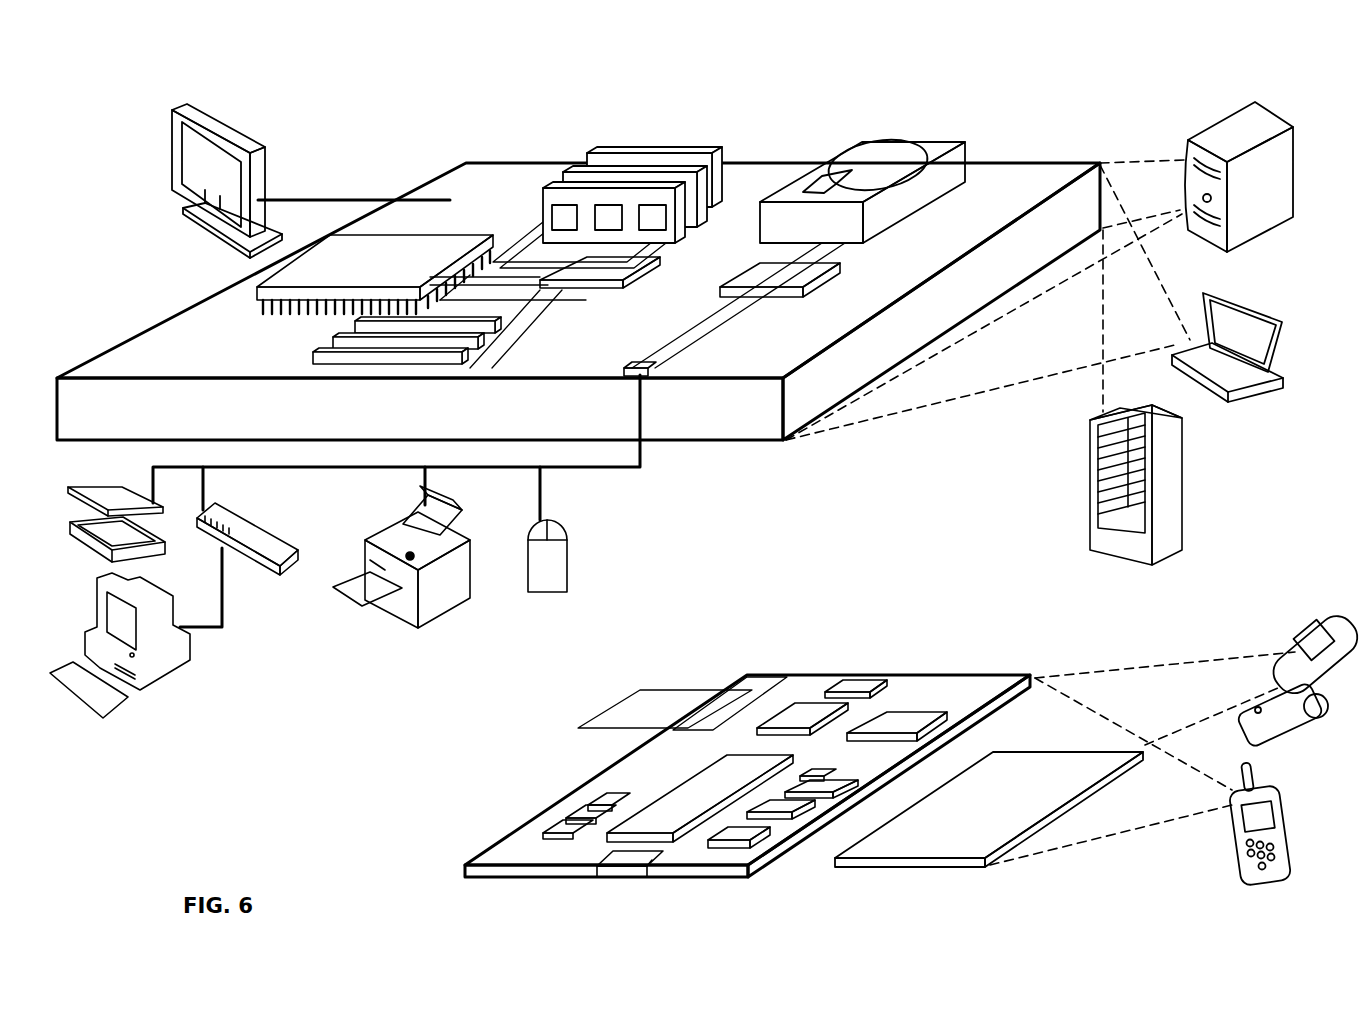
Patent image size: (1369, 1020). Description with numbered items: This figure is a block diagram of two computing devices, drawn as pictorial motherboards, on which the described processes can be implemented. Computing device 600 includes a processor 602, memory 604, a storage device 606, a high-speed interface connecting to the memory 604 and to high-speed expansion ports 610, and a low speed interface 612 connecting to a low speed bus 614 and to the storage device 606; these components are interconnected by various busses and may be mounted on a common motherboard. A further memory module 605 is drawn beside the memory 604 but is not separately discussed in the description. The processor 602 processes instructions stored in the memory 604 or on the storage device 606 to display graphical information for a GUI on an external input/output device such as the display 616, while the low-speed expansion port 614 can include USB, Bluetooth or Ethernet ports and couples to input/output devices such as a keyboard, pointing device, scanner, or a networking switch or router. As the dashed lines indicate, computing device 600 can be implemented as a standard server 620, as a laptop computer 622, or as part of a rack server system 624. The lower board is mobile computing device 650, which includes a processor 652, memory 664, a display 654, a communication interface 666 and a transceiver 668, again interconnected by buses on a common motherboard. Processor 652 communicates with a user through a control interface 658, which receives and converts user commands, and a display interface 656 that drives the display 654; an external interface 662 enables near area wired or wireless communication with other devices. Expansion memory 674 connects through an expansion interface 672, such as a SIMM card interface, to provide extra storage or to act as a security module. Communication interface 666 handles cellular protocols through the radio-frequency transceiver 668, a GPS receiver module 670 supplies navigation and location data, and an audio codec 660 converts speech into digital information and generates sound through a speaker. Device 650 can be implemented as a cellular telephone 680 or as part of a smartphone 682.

The computing device 600 is at (1296, 80).
The processor 602 is at (257, 288).
The memory 604 is at (622, 152).
The memory modules 605 is at (587, 157).
The storage device 606 is at (860, 140).
The high-speed expansion ports 610 is at (330, 343).
The low speed interface 612 is at (768, 282).
The low speed bus 614 is at (652, 378).
The display 616 is at (193, 93).
The standard server 620 is at (1205, 130).
The laptop computer 622 is at (1237, 392).
The rack server system 624 is at (1108, 485).
The computing device 650 is at (446, 762).
The processor 652 is at (675, 820).
The display 654 is at (957, 838).
The display interface 656 is at (733, 842).
The control interface 658 is at (787, 815).
The audio codec 660 is at (790, 795).
The external interface 662 is at (623, 866).
The memory 664 is at (570, 815).
The communication interface 666 is at (802, 712).
The transceiver 668 is at (903, 718).
The GPS receiver module 670 is at (867, 685).
The expansion interface 672 is at (723, 688).
The expansion memory 674 is at (622, 700).
The cellular telephone 680 is at (1300, 626).
The smartphone 682 is at (1234, 823).